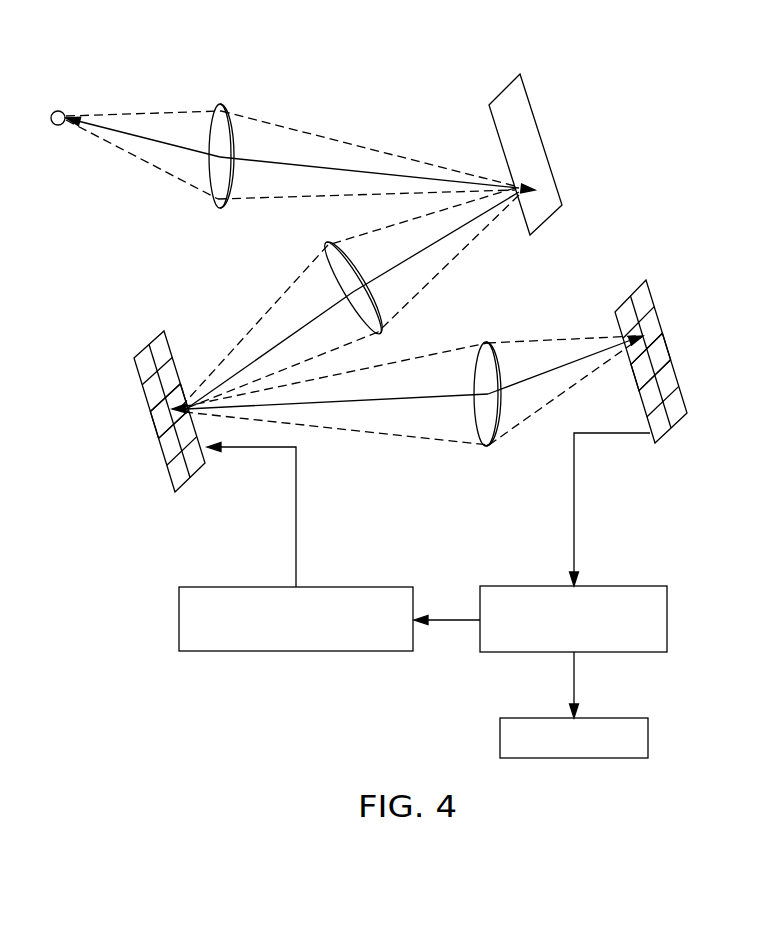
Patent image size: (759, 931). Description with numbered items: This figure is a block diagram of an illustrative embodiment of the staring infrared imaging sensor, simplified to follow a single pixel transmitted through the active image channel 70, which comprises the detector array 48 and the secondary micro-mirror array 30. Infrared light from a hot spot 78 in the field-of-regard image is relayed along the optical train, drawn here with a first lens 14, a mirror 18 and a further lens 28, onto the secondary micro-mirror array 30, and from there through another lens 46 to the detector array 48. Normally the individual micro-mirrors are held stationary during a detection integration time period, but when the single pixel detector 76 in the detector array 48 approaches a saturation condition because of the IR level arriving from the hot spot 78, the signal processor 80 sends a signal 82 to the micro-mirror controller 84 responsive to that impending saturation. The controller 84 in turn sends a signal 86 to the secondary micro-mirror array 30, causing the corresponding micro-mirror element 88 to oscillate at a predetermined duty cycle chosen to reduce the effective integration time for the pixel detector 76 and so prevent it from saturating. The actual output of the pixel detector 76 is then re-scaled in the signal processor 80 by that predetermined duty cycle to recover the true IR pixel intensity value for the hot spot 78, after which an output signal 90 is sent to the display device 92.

The active image channel 70 is at (344, 108).
The hot spot 78 is at (55, 125).
The lens 14 is at (219, 209).
The mirror 18 is at (489, 130).
The lens 28 is at (382, 332).
The secondary micro-mirror array 30 is at (134, 375).
The micro-mirror element 88 is at (173, 443).
The signal 86 is at (297, 525).
The micro-mirror controller 84 is at (300, 652).
The signal 82 is at (453, 623).
The lens 46 is at (487, 340).
The detector array 48 is at (628, 297).
The pixel detector 76 is at (648, 342).
The signal processor 80 is at (667, 620).
The output signal 90 is at (574, 678).
The display device 92 is at (648, 738).